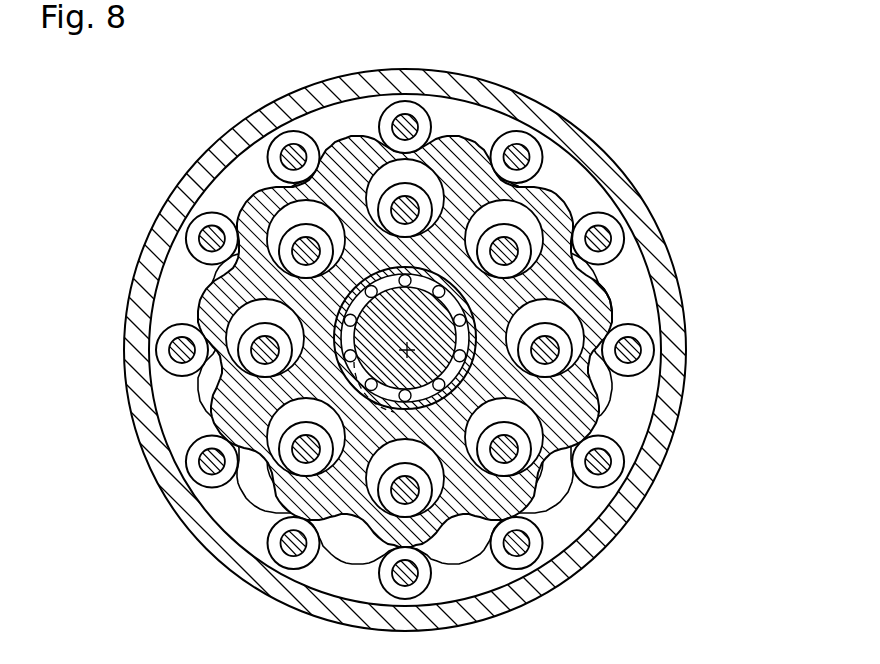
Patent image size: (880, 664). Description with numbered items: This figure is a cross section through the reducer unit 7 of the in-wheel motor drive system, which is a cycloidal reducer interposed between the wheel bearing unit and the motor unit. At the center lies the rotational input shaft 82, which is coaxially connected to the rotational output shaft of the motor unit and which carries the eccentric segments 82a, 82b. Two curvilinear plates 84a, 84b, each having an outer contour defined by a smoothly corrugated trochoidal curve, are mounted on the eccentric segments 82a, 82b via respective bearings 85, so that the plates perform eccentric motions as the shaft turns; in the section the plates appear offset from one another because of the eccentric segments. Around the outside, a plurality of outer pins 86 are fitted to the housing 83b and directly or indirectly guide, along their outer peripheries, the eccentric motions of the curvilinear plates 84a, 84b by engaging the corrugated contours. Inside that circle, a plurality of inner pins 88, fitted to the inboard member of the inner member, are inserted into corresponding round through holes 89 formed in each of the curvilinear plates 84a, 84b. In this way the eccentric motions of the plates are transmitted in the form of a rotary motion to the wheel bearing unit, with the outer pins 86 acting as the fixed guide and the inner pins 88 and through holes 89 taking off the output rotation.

The reducer unit 7 is at (212, 135).
The rotational input shaft 82 is at (53, 399).
The eccentric segment 82a is at (240, 421).
The eccentric segment 82b is at (395, 346).
The housing 83b is at (175, 207).
The curvilinear plate 84a is at (650, 242).
The curvilinear plate 84b is at (548, 198).
The bearing 85 is at (388, 294).
The outer pin 86 is at (400, 122).
The inner pin 88 is at (496, 232).
The round through hole 89 is at (598, 306).